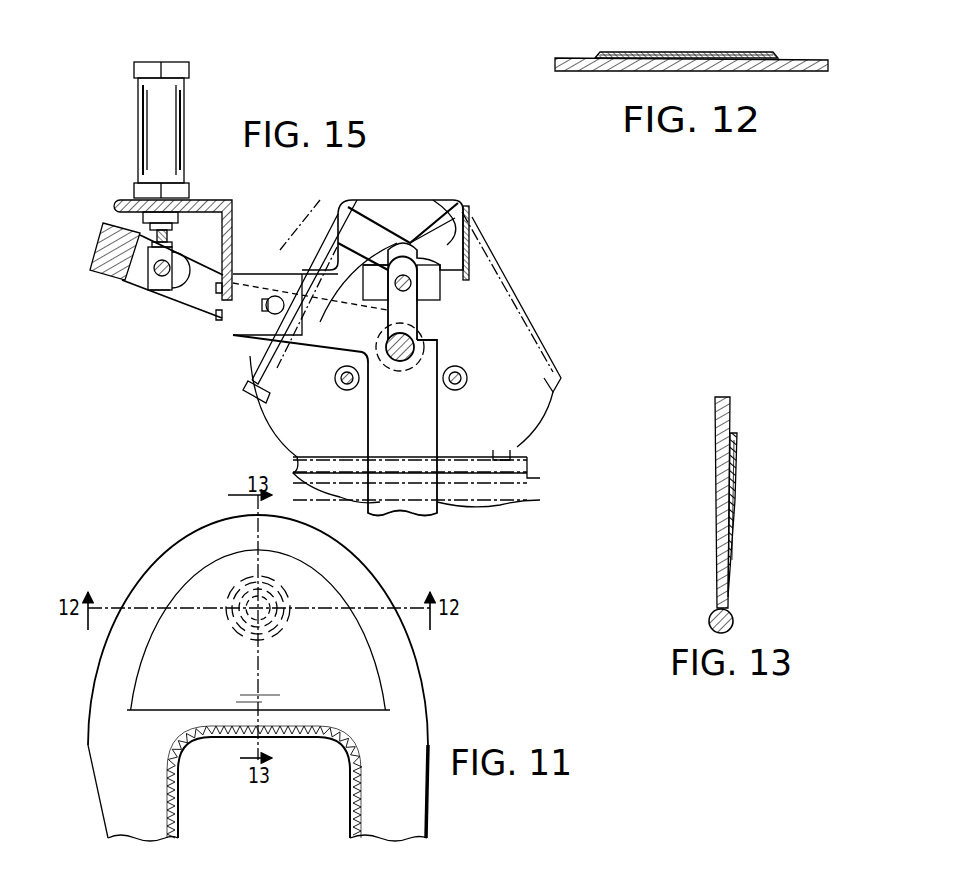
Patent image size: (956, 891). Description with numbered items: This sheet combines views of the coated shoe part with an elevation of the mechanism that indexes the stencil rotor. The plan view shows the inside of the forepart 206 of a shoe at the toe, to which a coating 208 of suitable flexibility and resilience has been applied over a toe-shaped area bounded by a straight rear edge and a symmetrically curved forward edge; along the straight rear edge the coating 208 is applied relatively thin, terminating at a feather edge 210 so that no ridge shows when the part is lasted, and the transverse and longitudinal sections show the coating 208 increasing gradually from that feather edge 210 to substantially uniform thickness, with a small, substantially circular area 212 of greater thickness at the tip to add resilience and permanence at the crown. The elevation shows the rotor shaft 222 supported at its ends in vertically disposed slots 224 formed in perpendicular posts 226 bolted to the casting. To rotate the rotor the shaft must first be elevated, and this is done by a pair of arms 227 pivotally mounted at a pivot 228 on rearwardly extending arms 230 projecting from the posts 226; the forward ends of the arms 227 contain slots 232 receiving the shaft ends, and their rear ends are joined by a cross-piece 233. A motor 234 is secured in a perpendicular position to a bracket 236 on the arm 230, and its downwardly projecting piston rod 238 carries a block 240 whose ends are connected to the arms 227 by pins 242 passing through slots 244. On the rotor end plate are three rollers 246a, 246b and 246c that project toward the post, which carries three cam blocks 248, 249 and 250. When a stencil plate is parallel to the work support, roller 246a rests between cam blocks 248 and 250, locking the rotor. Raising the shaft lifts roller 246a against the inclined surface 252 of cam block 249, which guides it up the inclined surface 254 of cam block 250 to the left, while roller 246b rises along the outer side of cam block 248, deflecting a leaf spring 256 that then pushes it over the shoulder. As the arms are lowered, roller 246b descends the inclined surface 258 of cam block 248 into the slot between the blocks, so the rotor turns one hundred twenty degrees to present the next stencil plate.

In FIG. 12, the forepart 206 is at (803, 59).
In FIG. 13, the forepart 206 is at (718, 447).
In FIG. 11, the forepart 206 is at (360, 570).
In FIG. 12, the coating 208 is at (742, 54).
In FIG. 13, the coating 208 is at (733, 452).
In FIG. 11, the coating 208 is at (233, 553).
In FIG. 13, the lower edge / bead 210 is at (725, 598).
In FIG. 11, the lower edge / bead 210 is at (167, 711).
In FIG. 12, the circular area 212 is at (677, 52).
In FIG. 13, the circular area 212 is at (737, 490).
In FIG. 11, the circular area 212 is at (246, 600).
In FIG. 15, the shaft 222 is at (412, 340).
In FIG. 15, the slots 224 is at (392, 307).
In FIG. 15, the posts 226 is at (418, 431).
In FIG. 15, the arms 227 is at (207, 312).
In FIG. 15, the link rod 228 is at (271, 294).
In FIG. 15, the arms 230 is at (250, 338).
In FIG. 15, the slots 232 is at (428, 352).
In FIG. 15, the cross-piece 233 is at (135, 252).
In FIG. 15, the motor 234 is at (158, 112).
In FIG. 15, the bracket 236 is at (226, 202).
In FIG. 15, the piston rod 238 is at (167, 232).
In FIG. 15, the block 240 is at (160, 278).
In FIG. 15, the pins 242 is at (165, 290).
In FIG. 15, the slots 244 is at (150, 270).
In FIG. 15, the roller 246a is at (415, 210).
In FIG. 15, the roller 246b is at (448, 392).
In FIG. 15, the roller 246c is at (337, 385).
In FIG. 15, the cam block 248 is at (430, 280).
In FIG. 15, the cam block 249 is at (368, 207).
In FIG. 15, the cam block 250 is at (376, 285).
In FIG. 15, the inclined surface 252 is at (403, 248).
In FIG. 15, the inclined surface 254 is at (366, 262).
In FIG. 15, the leaf spring 256 is at (480, 258).
In FIG. 15, the inclined surface 258 is at (468, 235).